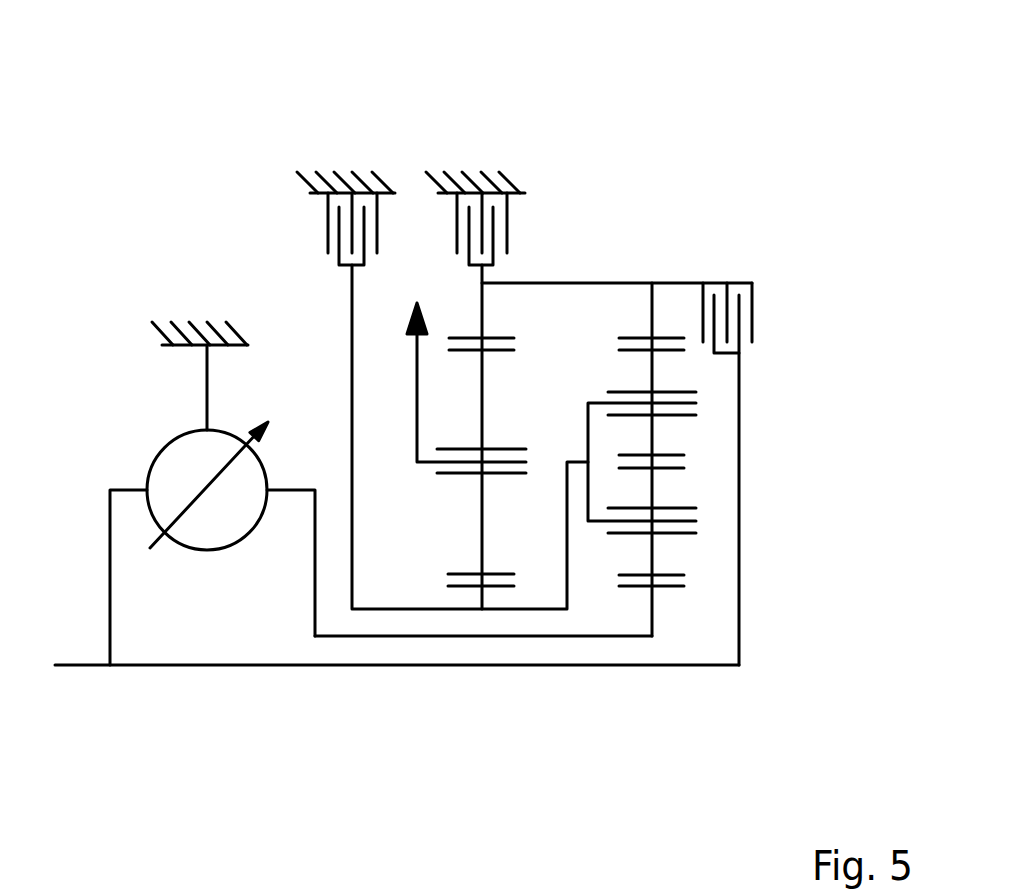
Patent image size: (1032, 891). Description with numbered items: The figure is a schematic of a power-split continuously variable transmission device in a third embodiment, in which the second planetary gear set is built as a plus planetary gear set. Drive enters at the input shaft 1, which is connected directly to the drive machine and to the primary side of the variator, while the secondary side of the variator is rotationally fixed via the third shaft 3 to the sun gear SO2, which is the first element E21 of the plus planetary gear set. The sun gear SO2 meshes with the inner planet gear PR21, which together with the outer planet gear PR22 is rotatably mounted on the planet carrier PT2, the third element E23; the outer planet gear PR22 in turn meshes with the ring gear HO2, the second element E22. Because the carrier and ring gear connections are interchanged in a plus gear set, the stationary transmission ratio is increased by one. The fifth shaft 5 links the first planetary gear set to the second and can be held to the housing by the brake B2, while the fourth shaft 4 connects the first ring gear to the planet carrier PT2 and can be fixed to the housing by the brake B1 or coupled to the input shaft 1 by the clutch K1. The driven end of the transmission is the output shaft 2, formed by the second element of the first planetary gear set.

The input shaft 1 is at (85, 665).
The output shaft 2 is at (416, 397).
The third shaft 3 is at (333, 637).
The fourth shaft 4 is at (553, 283).
The fifth shaft 5 is at (422, 609).
The first shift element B1 is at (524, 225).
The third shift element B2 is at (305, 222).
The second shift element K1 is at (778, 314).
The ring gear HO2 is at (648, 180).
The second element E22 is at (640, 336).
The outer planet gear PR22 is at (652, 370).
The inner planet gear PR21 is at (652, 553).
The planet carrier PT2 is at (595, 643).
The third element E23 is at (594, 546).
The sun gear SO2 is at (757, 628).
The first element E21 is at (660, 586).